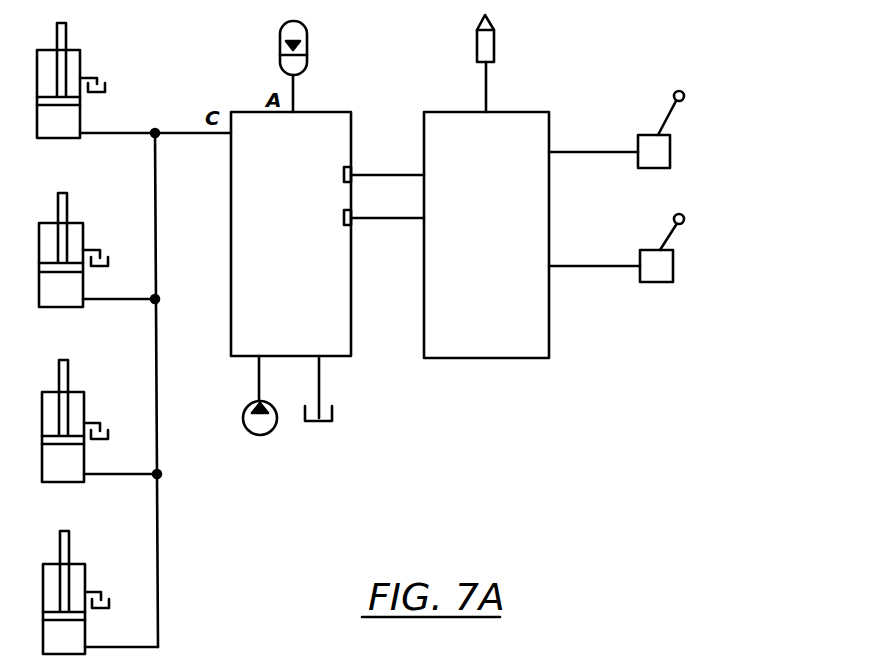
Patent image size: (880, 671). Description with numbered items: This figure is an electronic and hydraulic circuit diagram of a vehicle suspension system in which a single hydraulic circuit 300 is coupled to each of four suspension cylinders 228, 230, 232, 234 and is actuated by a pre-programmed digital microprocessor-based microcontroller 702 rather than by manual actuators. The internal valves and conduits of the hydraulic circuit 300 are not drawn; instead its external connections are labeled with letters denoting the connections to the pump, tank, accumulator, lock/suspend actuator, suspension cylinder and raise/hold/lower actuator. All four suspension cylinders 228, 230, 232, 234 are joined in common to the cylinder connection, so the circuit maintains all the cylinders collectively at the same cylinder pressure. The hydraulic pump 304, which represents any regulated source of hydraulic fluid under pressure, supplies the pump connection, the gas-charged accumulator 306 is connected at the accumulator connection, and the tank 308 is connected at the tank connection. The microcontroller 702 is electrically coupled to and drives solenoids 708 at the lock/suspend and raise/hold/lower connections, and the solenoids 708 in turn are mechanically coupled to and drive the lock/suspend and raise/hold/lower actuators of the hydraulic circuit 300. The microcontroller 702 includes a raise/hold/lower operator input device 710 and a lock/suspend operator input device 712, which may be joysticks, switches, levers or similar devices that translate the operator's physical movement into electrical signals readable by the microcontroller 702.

The suspension cylinder 228 is at (82, 76).
The suspension cylinder 230 is at (120, 238).
The suspension cylinder 232 is at (120, 408).
The suspension cylinder 234 is at (125, 565).
The hydraulic circuit 300 is at (318, 288).
The hydraulic pump 304 is at (243, 420).
The gas-charged accumulator 306 is at (309, 42).
The tank 308 is at (333, 419).
The microcontroller 702 is at (515, 248).
The solenoid 708 is at (344, 211).
The raise/hold/lower operator input device 710 is at (671, 160).
The lock/suspend operator input device 712 is at (674, 270).